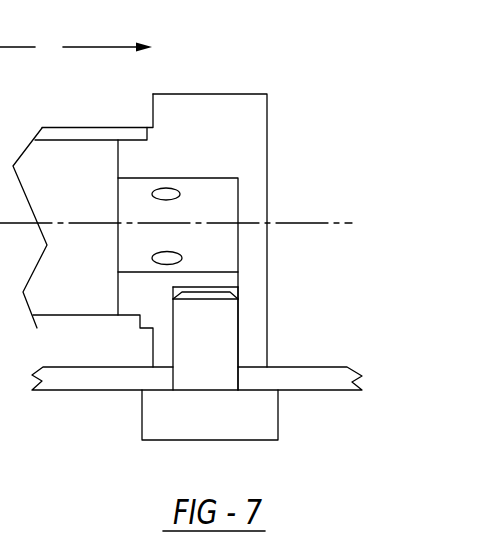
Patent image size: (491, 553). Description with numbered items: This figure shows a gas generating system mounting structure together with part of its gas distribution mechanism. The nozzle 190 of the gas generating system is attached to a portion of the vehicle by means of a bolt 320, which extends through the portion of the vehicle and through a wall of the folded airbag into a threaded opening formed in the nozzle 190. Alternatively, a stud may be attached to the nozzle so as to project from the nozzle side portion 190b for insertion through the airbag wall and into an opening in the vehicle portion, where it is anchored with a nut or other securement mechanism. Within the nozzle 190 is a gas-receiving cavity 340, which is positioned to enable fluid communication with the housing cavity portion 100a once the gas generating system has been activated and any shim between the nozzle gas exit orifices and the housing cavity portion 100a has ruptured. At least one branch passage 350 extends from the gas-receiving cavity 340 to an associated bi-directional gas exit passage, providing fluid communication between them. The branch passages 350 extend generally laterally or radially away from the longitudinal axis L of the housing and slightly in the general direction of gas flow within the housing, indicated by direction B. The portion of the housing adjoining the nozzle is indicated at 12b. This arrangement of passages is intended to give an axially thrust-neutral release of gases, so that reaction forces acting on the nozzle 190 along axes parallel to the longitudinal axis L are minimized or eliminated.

The second end of housing 12b is at (133, 126).
The housing cavity portion 100a is at (52, 177).
The nozzle 190 is at (258, 85).
The nozzle side portion 190b is at (267, 368).
The gas-receiving cavity 340 is at (220, 208).
The branch passage 350 is at (163, 198).
The bolt 320 is at (167, 418).
The longitudinal axis L is at (327, 227).
The direction of gas flow B is at (76, 35).